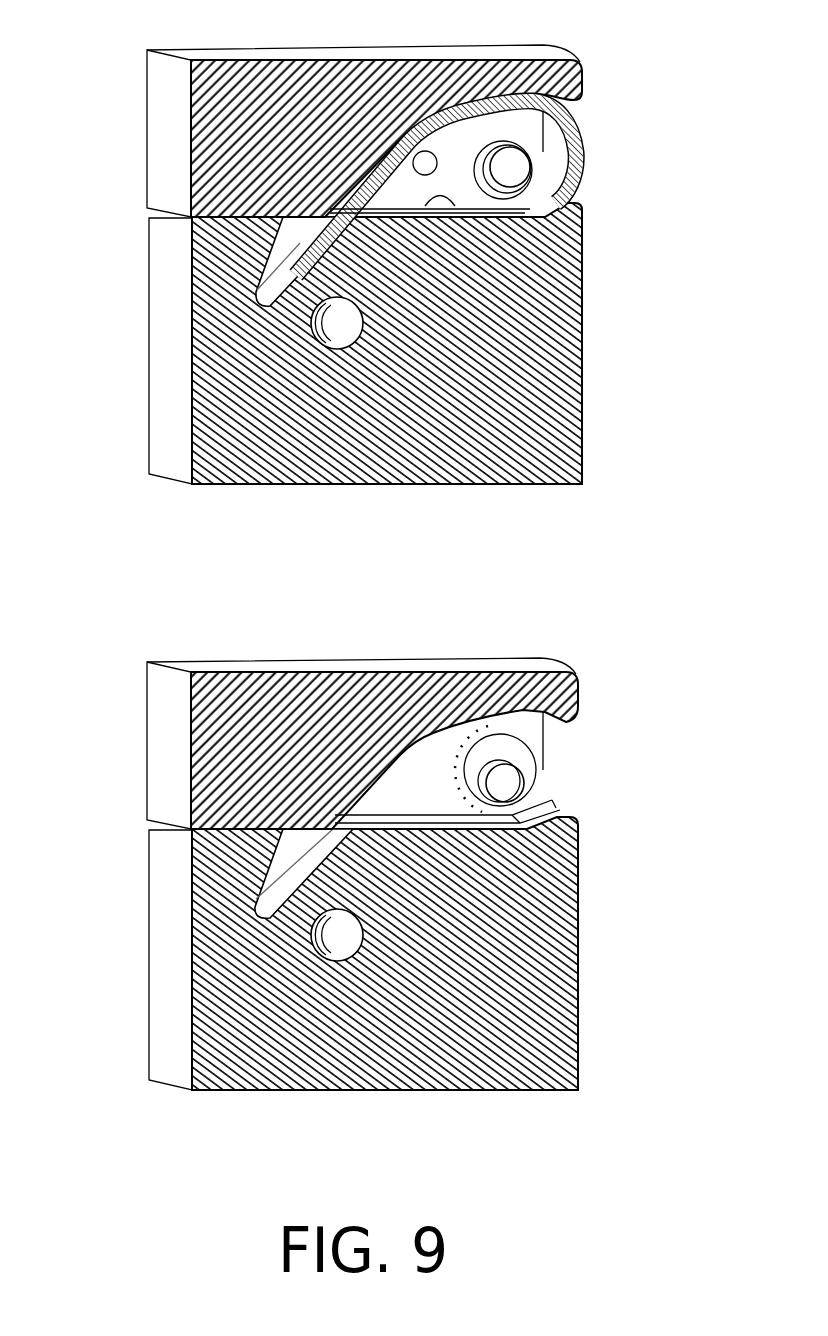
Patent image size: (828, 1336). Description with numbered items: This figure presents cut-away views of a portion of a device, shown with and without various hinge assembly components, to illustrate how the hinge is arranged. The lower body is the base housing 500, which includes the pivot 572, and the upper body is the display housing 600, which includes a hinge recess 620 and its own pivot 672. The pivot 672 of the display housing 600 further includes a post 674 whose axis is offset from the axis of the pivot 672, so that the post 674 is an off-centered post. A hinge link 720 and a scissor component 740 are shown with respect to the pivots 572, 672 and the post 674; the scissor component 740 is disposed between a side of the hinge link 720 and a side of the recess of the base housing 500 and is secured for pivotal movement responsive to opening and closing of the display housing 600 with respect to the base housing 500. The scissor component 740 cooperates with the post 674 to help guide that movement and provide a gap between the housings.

The base housing 500 is at (585, 330).
The pivot 572 is at (310, 333).
The display housing 600 is at (482, 56).
The hinge recess 620 is at (568, 751).
The pivot 672 is at (536, 769).
The post 674 is at (522, 165).
The hinge link 720 is at (582, 151).
The scissor component 740 is at (520, 198).